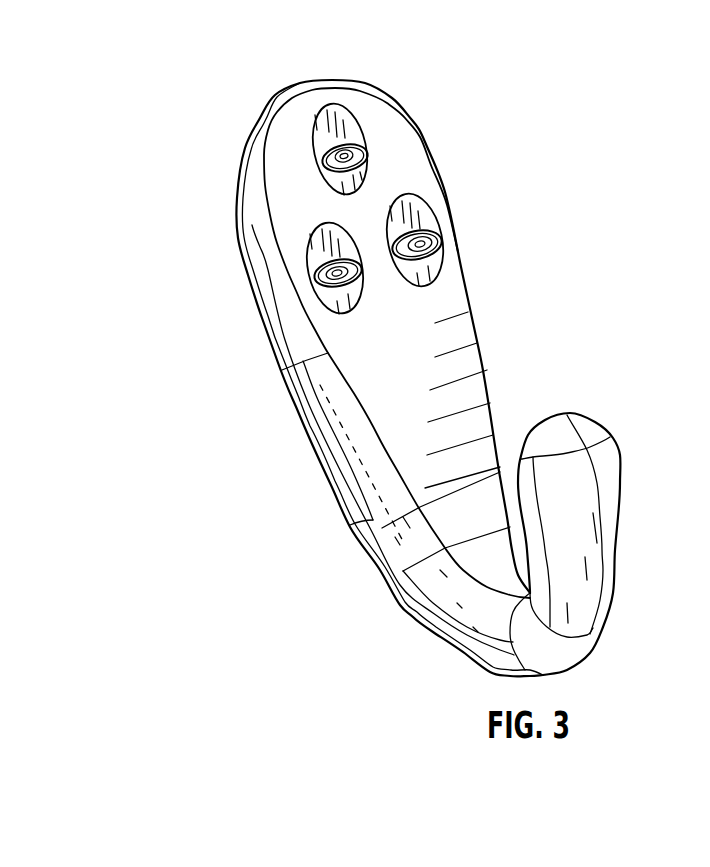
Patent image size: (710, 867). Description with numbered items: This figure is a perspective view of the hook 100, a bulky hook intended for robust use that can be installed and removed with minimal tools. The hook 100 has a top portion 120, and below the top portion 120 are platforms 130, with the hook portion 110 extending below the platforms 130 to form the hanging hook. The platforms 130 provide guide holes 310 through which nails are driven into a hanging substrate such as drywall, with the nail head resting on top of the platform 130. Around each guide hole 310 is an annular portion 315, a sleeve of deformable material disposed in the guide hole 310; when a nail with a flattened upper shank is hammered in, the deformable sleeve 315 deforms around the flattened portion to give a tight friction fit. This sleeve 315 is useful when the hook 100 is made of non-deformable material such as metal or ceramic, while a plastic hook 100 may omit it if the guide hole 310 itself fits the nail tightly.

The hook 100 is at (415, 67).
The hook portion 110 is at (608, 510).
The top portion 120 is at (408, 120).
The platform 130 is at (336, 173).
The guide hole 310 is at (420, 244).
The annular portion 315 is at (360, 166).